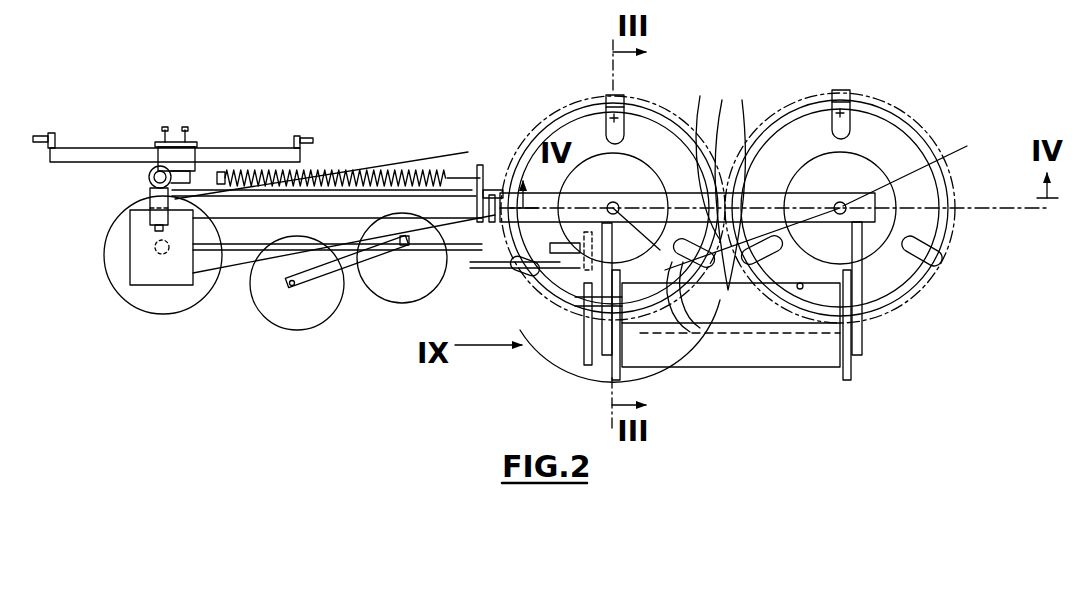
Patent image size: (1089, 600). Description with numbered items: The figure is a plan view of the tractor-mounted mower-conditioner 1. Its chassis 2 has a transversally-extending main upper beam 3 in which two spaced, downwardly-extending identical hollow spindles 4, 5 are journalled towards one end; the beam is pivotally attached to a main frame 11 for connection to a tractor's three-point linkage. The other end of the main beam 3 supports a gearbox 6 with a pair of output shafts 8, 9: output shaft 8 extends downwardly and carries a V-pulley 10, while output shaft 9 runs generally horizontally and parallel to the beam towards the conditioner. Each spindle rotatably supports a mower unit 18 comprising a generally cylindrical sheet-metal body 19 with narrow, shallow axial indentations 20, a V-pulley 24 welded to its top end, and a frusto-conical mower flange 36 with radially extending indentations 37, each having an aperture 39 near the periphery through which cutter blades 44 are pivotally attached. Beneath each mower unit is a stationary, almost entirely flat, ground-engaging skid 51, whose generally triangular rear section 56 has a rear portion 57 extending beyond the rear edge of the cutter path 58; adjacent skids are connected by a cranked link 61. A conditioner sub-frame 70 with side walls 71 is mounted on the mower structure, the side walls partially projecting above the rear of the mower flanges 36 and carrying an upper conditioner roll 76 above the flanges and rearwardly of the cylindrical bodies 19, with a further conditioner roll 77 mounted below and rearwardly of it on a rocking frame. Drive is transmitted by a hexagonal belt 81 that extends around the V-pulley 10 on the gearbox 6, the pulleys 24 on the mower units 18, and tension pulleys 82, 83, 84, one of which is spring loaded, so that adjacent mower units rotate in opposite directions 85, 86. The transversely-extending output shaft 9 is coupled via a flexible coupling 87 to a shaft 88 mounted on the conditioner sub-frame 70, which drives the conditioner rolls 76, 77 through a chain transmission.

The mower-conditioner 1 is at (918, 70).
The chassis 2 is at (948, 200).
The main upper beam 3 is at (948, 232).
The hollow spindle 4 is at (655, 170).
The hollow spindle 5 is at (915, 164).
The gearbox 6 is at (173, 286).
The output shaft 8 is at (160, 258).
The output shaft 9 is at (243, 262).
The V-pulley 10 is at (222, 285).
The main frame 11 is at (68, 163).
The mower unit 18 is at (697, 113).
The cylindrical body 19 is at (575, 135).
The indentation 20 is at (548, 165).
The V-pulley 24 is at (617, 205).
The mower flange 36 is at (706, 145).
The indentation 37 is at (620, 120).
The aperture 39 is at (600, 135).
The cutter blade 44 is at (606, 100).
The skid 51 is at (560, 330).
The rear section 56 is at (583, 335).
The rear portion 57 is at (637, 333).
The cutter path 58 is at (523, 130).
The link 61 is at (675, 285).
The conditioner sub-frame 70 is at (608, 358).
The side wall 71 is at (588, 365).
The upper conditioner roll 76 is at (797, 314).
The conditioner roll 77 is at (815, 367).
The hexagonal belt 81 is at (395, 303).
The tension pulley 82 is at (470, 170).
The tension pulley 83 is at (378, 278).
The tension pulley 84 is at (323, 316).
The direction of rotation 85 is at (675, 14).
The direction of rotation 86 is at (838, 15).
The flexible coupling 87 is at (540, 262).
The shaft 88 is at (575, 255).